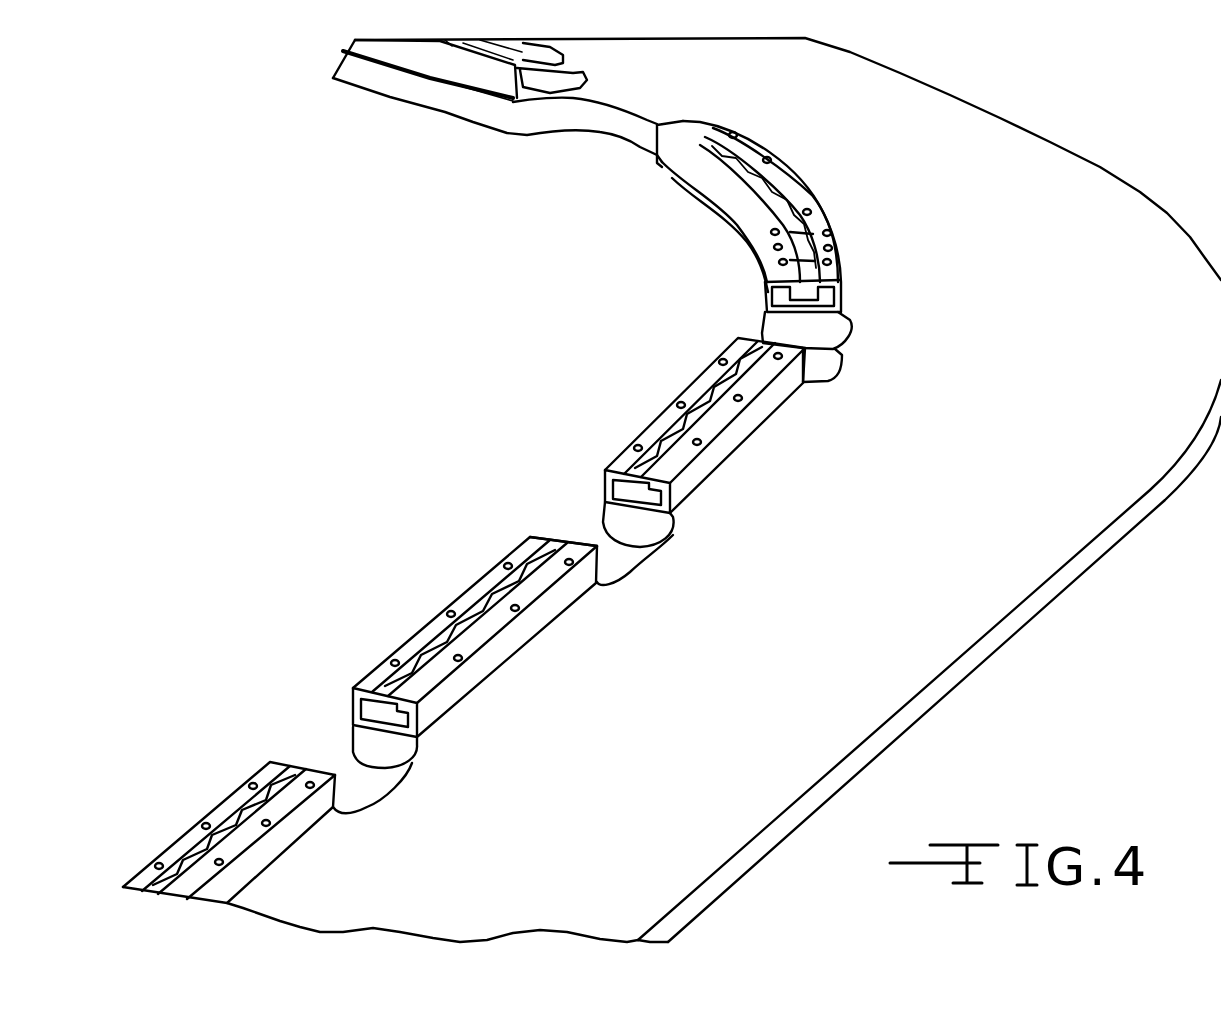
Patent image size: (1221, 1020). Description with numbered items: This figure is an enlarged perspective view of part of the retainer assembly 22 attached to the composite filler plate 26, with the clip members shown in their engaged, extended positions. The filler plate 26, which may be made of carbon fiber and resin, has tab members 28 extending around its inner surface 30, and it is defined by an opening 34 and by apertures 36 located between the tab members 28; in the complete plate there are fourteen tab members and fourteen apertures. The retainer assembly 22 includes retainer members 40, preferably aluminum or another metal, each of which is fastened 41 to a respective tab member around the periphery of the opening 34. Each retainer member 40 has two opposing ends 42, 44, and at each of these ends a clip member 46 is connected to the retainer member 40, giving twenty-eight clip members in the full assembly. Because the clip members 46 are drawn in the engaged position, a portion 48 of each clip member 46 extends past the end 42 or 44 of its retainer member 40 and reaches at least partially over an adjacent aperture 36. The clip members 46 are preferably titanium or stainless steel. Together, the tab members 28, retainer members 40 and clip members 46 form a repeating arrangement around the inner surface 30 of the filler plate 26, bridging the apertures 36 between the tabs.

The retainer assembly 22 is at (678, 368).
The composite filler plate 26 is at (993, 540).
The tab members 28 is at (615, 525).
The inner surface 30 is at (688, 205).
The opening 34 is at (362, 148).
The apertures 36 is at (608, 135).
The retainer members 40 is at (622, 460).
The fastened 41 is at (430, 647).
The end 42 is at (558, 538).
The end 44 is at (353, 688).
The clip member 46 is at (555, 538).
The portion 48 is at (352, 714).